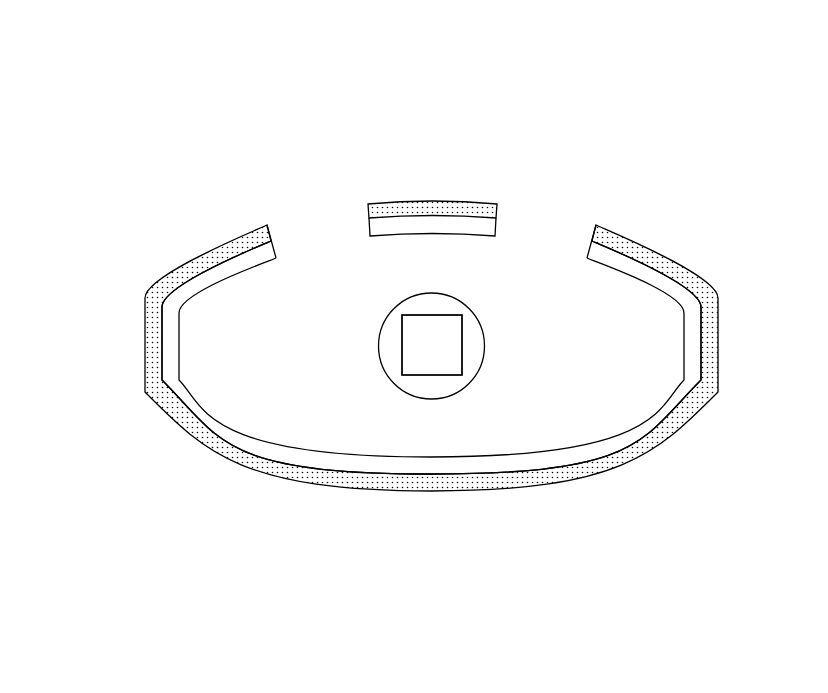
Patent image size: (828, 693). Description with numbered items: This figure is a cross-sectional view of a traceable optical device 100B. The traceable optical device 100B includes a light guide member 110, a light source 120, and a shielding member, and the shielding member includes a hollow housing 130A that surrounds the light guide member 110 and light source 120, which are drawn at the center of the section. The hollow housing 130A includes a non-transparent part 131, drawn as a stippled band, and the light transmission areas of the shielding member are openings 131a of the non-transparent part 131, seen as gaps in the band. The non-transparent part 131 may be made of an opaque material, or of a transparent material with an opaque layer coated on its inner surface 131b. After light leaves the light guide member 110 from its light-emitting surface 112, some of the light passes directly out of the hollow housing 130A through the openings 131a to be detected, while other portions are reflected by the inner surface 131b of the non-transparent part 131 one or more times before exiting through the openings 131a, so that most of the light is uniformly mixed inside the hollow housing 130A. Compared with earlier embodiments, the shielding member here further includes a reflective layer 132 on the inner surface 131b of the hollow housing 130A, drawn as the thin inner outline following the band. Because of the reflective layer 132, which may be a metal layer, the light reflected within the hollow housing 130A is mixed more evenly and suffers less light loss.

The traceable optical device 100B is at (92, 57).
The hollow housing 130A is at (196, 160).
The non-transparent part 131 is at (206, 258).
The openings 131a is at (288, 216).
The inner surface 131b is at (162, 318).
The reflective layer 132 is at (173, 350).
The light guide member 110 is at (392, 360).
The light-emitting surface 112 is at (405, 393).
The light source 120 is at (431, 360).